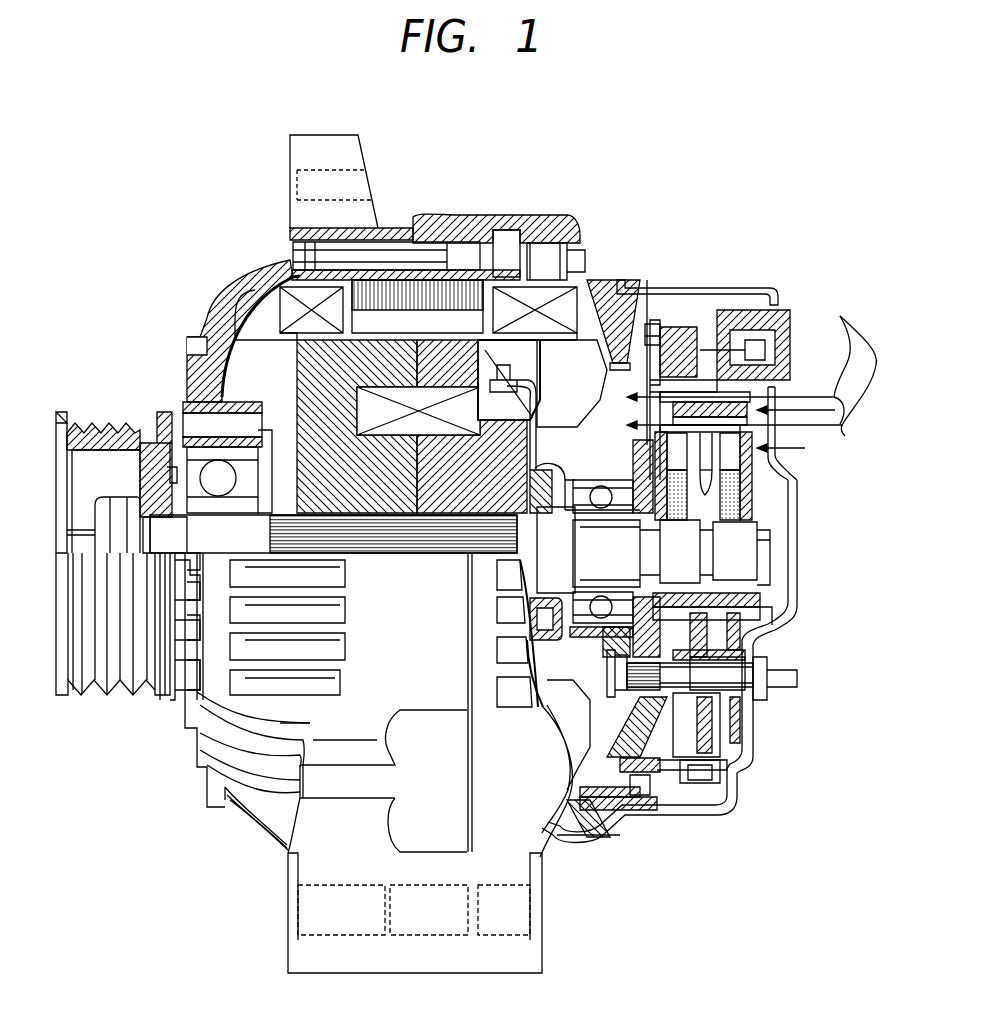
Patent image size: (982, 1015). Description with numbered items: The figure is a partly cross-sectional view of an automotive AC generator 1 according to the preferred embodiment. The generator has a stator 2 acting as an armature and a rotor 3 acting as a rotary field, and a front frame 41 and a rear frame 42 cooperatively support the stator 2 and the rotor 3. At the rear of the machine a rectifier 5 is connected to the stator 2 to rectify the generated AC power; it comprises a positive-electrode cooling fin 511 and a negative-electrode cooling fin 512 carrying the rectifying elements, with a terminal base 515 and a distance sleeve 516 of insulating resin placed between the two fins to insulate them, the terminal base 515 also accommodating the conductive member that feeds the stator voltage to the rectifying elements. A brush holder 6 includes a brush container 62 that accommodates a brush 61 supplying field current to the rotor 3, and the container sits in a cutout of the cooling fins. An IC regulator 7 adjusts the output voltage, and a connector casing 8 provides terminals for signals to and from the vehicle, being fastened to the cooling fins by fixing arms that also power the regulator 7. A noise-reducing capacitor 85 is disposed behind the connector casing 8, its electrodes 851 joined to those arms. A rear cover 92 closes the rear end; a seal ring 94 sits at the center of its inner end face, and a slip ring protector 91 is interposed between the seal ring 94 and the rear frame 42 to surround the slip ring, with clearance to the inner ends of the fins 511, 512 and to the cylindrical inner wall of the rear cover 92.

The automotive AC generator 1 is at (205, 283).
The stator 2 is at (262, 298).
The rotor 3 is at (318, 390).
The front frame 41 is at (440, 220).
The rear frame 42 is at (542, 218).
The rectifier 5 is at (785, 667).
The positive-electrode cooling fin 511 is at (700, 738).
The negative-electrode cooling fin 512 is at (735, 715).
The terminal base 515 is at (675, 780).
The distance sleeve 516 is at (772, 622).
The brush holder 6 is at (760, 455).
The brush 61 is at (765, 543).
The brush container 62 is at (745, 480).
The IC regulator 7 is at (790, 398).
The connector casing 8 is at (783, 303).
The capacitor 85 is at (678, 328).
The electrodes 851 is at (651, 332).
The slip ring protector 91 is at (730, 572).
The rear cover 92 is at (727, 815).
The seal ring 94 is at (755, 600).